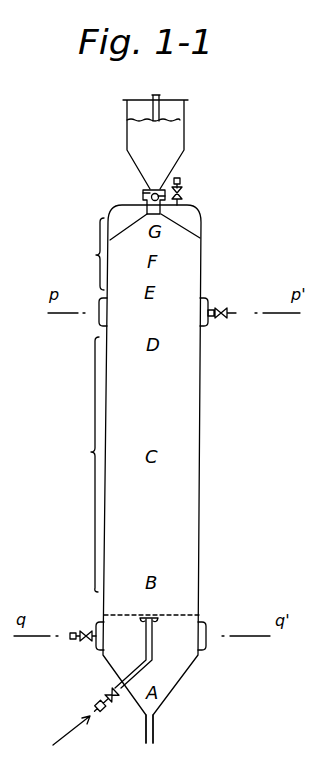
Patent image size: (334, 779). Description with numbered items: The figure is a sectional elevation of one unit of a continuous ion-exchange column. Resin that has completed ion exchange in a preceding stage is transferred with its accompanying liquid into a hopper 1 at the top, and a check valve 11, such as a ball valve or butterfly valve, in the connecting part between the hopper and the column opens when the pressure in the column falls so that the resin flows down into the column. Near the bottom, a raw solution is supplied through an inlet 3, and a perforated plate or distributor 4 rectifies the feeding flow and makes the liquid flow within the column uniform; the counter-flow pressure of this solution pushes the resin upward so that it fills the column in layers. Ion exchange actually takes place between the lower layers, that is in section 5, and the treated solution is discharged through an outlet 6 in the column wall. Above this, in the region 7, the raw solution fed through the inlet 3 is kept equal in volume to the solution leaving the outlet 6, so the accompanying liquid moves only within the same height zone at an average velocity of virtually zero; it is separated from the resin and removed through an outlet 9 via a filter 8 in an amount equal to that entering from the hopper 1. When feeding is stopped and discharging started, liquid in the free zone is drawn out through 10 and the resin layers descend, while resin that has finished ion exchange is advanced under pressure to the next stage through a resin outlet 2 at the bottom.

The hopper 1 is at (186, 128).
The resin outlet 2 is at (152, 748).
The inlet 3 is at (152, 612).
The perforated plate or distributor 4 is at (118, 614).
The section 5 is at (84, 464).
The outlet 6 is at (236, 313).
The liquid replacement region 7 is at (89, 254).
The filter 8 is at (195, 226).
The outlet 9 is at (183, 190).
The draw-out section 10 is at (68, 637).
The check valve 11 is at (143, 192).